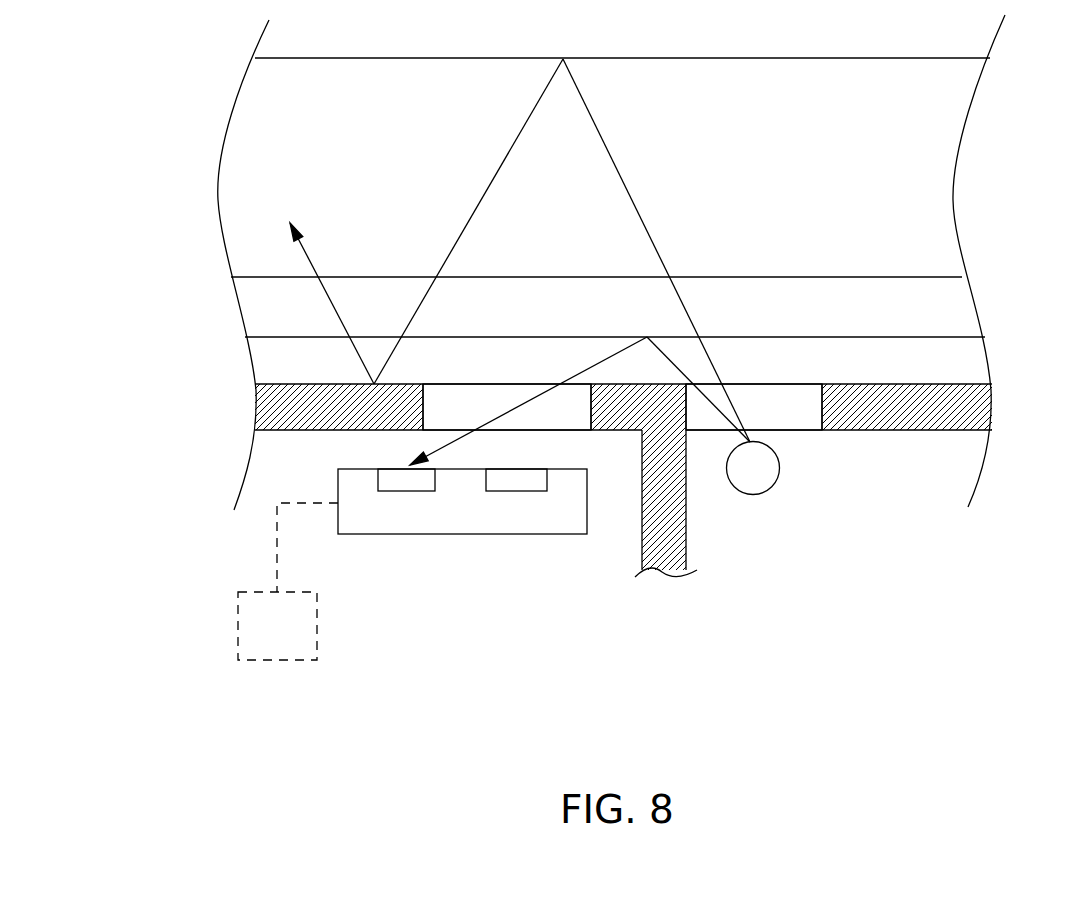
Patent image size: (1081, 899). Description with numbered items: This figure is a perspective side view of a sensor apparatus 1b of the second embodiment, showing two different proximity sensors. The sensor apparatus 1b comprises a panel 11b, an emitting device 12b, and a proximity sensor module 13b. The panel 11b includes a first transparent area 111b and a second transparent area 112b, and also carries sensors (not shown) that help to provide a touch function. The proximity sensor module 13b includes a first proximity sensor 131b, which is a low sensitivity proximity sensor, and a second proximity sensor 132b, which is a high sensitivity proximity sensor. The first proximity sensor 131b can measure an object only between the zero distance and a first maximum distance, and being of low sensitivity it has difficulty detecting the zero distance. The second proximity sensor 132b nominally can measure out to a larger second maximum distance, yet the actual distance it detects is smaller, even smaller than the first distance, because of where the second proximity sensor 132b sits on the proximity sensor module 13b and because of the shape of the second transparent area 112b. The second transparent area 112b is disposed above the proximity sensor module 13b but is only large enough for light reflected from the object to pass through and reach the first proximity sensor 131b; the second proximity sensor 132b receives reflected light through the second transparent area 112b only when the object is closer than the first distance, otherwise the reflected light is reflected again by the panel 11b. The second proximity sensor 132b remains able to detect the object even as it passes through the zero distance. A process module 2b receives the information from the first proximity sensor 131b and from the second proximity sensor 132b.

The sensor apparatus 1b is at (887, 500).
The process module 2b is at (238, 628).
The panel 11b is at (880, 383).
The first transparent area 111b is at (770, 383).
The second transparent area 112b is at (498, 384).
The emitting device 12b is at (773, 488).
The proximity sensor module 13b is at (377, 515).
The first proximity sensor 131b is at (515, 492).
The second proximity sensor 132b is at (400, 492).